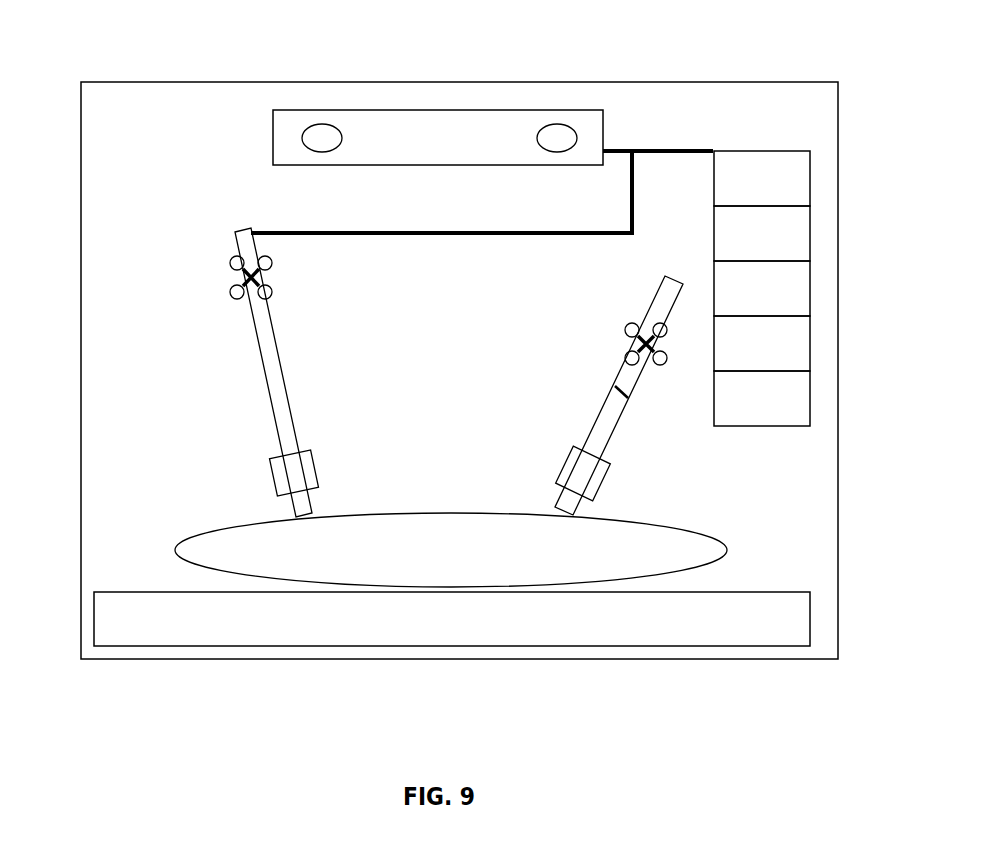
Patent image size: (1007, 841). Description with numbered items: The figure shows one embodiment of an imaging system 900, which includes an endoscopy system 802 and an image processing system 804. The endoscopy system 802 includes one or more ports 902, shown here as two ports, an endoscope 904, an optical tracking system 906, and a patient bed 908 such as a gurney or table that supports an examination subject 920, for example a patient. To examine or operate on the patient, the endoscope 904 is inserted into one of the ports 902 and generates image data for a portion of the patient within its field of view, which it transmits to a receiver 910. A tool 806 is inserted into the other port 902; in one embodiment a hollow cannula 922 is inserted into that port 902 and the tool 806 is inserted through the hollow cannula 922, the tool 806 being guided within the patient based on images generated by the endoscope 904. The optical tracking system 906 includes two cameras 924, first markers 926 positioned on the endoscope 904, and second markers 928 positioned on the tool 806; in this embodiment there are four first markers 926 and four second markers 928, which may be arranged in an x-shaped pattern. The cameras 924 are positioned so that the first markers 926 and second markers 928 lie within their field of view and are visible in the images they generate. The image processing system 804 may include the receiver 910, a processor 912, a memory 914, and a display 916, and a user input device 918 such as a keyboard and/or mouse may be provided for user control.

The endoscopy system 802 is at (200, 432).
The image processing system 804 is at (725, 225).
The tool 806 is at (672, 285).
The imaging system 900 is at (459, 370).
The ports 902 is at (287, 467).
The endoscope 904 is at (260, 345).
The optical tracking system 906 is at (402, 82).
The patient bed 908 is at (232, 619).
The receiver 910 is at (762, 178).
The processor 912 is at (762, 288).
The memory 914 is at (762, 233).
The display 916 is at (762, 343).
The user input device 918 is at (762, 398).
The examination subject 920 is at (328, 563).
The hollow cannula 922 is at (606, 428).
The cameras 924 is at (315, 137).
The first markers 926 is at (237, 262).
The second markers 928 is at (632, 330).